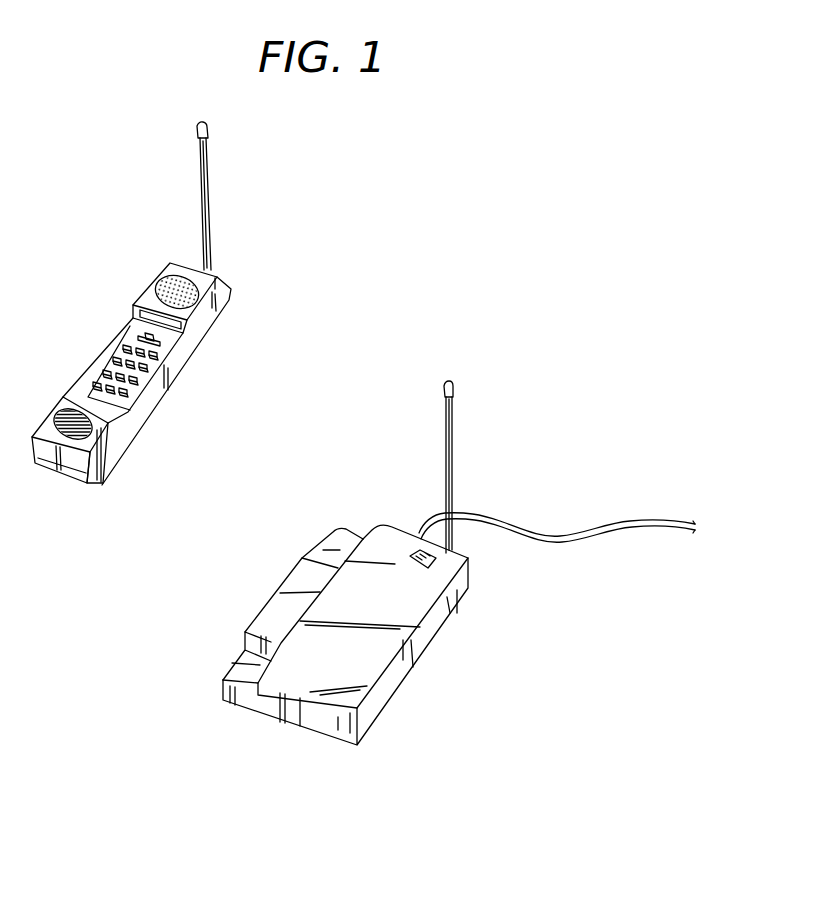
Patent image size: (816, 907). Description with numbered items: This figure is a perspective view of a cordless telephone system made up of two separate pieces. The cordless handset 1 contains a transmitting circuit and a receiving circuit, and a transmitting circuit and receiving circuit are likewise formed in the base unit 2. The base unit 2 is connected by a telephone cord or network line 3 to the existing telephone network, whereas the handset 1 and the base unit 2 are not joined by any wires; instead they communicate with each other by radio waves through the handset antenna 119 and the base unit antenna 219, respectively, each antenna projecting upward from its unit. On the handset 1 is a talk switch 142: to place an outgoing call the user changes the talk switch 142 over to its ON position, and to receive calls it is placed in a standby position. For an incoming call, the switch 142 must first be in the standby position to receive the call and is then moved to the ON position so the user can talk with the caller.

The cordless handset 1 is at (142, 417).
The antenna 119 is at (210, 210).
The talk switch 142 is at (163, 338).
The base unit 2 is at (432, 627).
The antenna 219 is at (453, 432).
The telephone cord or network line 3 is at (575, 531).